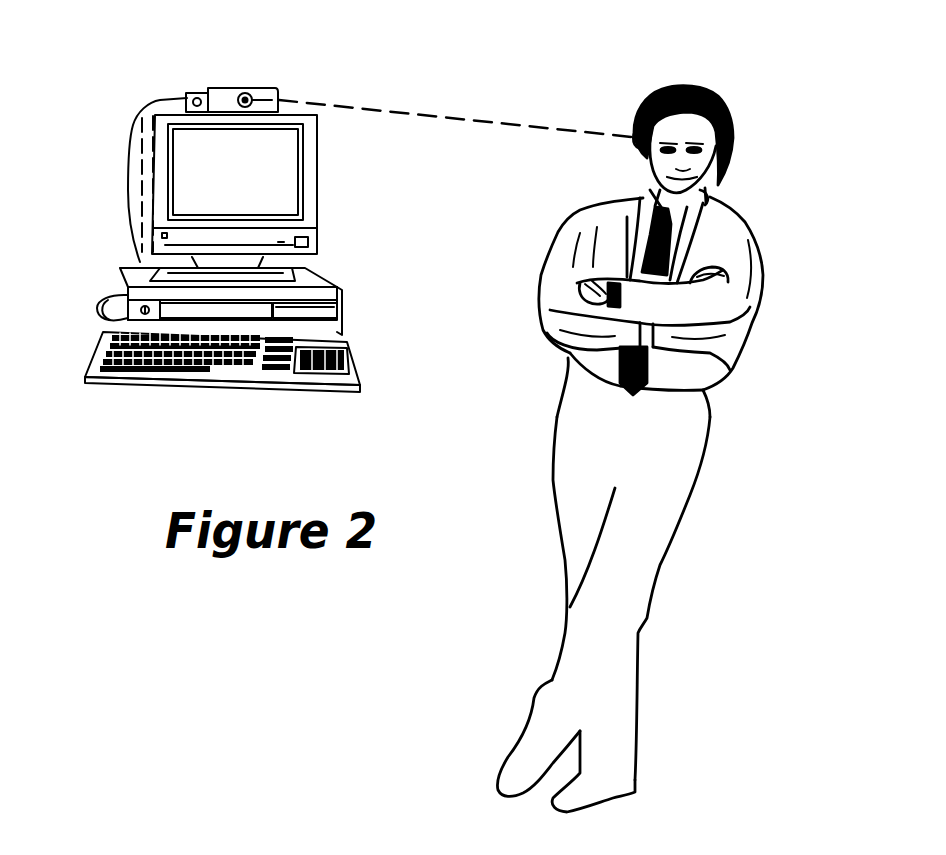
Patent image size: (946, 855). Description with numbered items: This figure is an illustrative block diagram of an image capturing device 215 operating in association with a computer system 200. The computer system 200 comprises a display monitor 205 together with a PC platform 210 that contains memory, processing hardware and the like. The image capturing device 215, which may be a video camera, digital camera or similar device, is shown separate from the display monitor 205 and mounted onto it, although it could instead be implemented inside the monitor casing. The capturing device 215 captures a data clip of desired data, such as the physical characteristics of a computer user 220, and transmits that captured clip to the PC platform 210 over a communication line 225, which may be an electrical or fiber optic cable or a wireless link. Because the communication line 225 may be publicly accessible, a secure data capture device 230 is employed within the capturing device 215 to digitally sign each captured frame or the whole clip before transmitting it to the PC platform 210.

The computer system 200 is at (96, 96).
The display monitor 205 is at (318, 157).
The PC platform 210 is at (340, 305).
The image capturing device 215 is at (275, 88).
The computer user 220 is at (752, 442).
The communication line 225 is at (130, 210).
The secure data capture device 230 is at (198, 90).